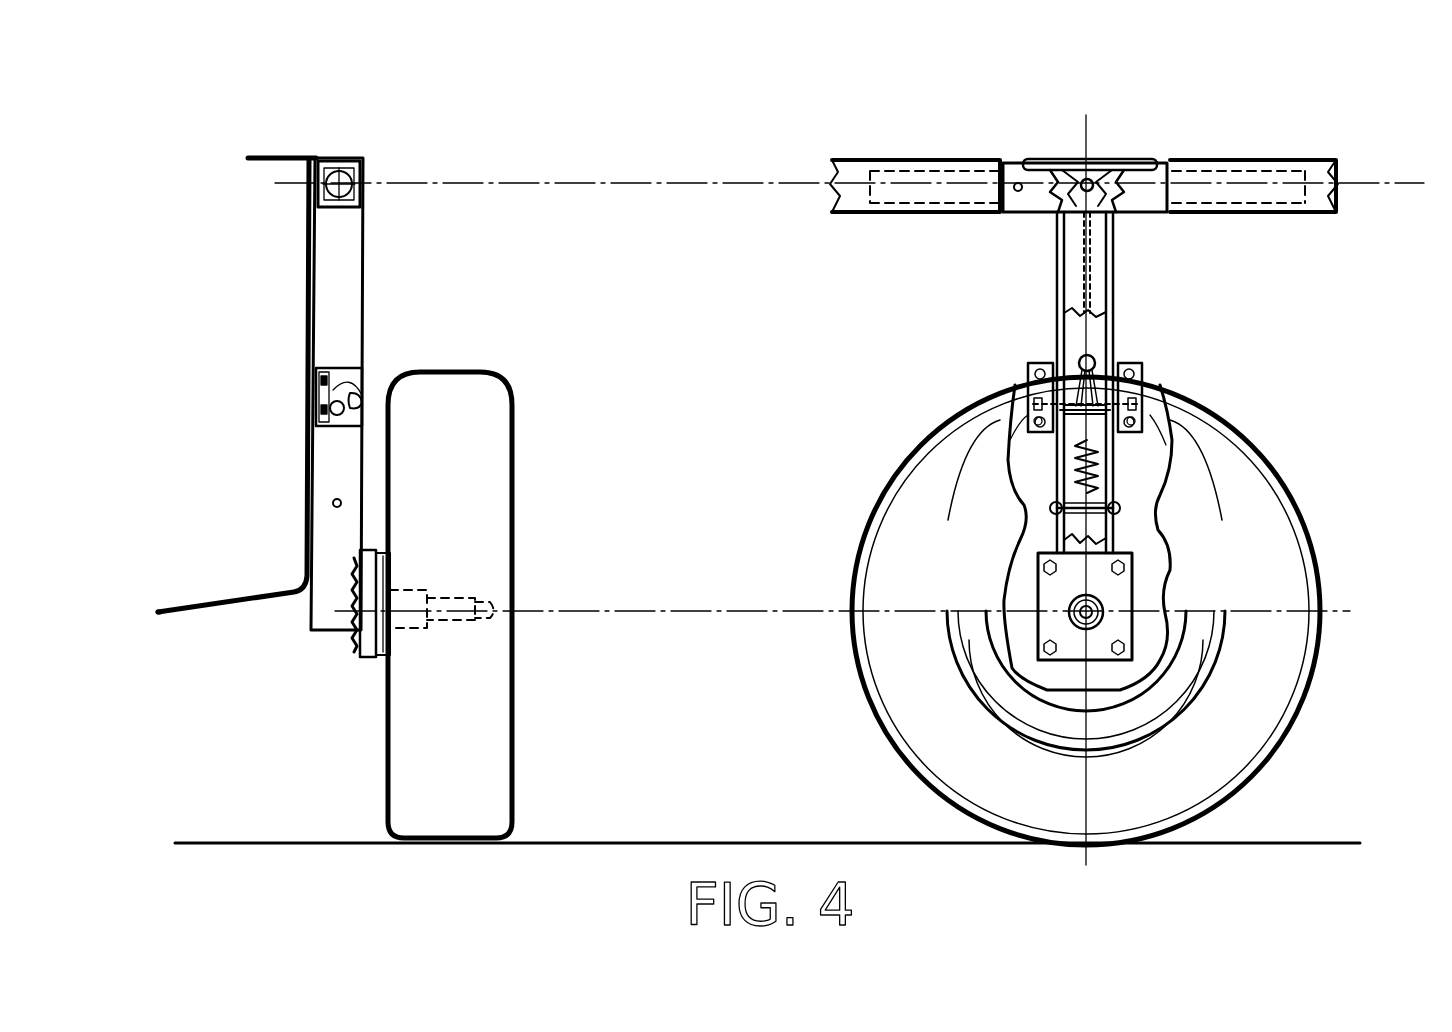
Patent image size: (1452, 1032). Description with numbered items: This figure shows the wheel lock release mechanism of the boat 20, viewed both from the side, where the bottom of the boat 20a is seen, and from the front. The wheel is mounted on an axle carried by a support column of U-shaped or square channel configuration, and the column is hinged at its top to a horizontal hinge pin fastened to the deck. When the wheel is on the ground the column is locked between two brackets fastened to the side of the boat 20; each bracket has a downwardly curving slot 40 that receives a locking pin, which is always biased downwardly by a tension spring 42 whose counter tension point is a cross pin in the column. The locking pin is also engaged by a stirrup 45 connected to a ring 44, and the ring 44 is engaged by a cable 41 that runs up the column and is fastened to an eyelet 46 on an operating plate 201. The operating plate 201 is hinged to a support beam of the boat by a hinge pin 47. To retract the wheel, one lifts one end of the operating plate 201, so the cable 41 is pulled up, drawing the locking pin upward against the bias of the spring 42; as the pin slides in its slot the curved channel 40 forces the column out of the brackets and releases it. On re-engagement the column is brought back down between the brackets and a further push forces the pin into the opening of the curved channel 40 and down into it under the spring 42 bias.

The boat 20 is at (300, 538).
The bottom of the boat 20a is at (226, 600).
The curving slot 40 is at (342, 372).
The cable 41 is at (1092, 282).
The tension spring 42 is at (1072, 470).
The ring 44 is at (1091, 358).
The stirrup 45 is at (1075, 395).
The eyelet 46 is at (1094, 180).
The hinge pin 47 is at (1018, 192).
The operating plate 201 is at (1060, 170).